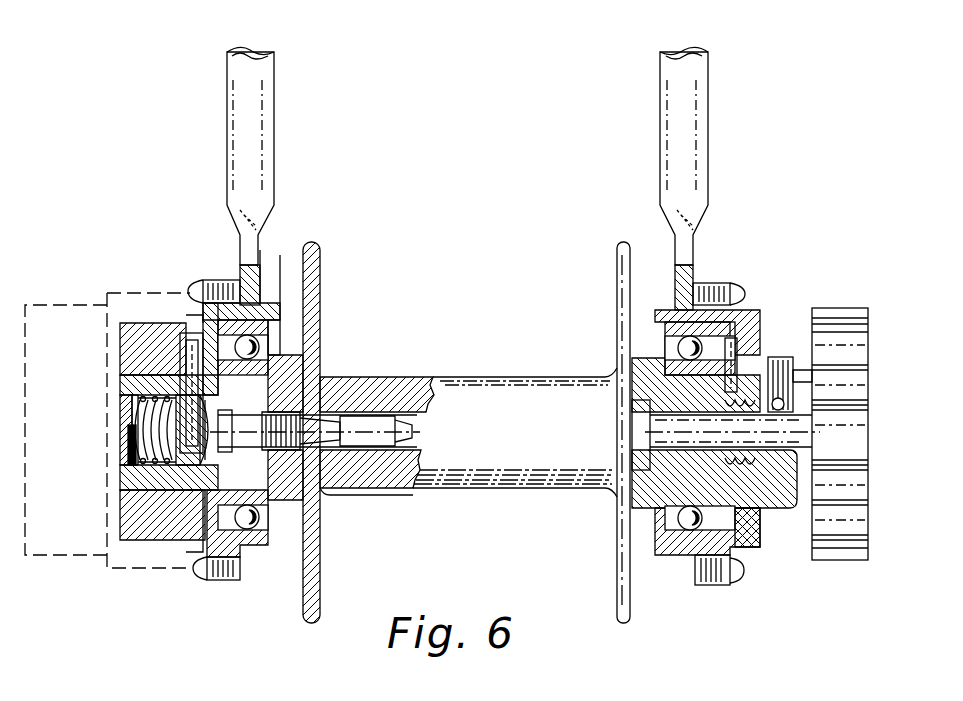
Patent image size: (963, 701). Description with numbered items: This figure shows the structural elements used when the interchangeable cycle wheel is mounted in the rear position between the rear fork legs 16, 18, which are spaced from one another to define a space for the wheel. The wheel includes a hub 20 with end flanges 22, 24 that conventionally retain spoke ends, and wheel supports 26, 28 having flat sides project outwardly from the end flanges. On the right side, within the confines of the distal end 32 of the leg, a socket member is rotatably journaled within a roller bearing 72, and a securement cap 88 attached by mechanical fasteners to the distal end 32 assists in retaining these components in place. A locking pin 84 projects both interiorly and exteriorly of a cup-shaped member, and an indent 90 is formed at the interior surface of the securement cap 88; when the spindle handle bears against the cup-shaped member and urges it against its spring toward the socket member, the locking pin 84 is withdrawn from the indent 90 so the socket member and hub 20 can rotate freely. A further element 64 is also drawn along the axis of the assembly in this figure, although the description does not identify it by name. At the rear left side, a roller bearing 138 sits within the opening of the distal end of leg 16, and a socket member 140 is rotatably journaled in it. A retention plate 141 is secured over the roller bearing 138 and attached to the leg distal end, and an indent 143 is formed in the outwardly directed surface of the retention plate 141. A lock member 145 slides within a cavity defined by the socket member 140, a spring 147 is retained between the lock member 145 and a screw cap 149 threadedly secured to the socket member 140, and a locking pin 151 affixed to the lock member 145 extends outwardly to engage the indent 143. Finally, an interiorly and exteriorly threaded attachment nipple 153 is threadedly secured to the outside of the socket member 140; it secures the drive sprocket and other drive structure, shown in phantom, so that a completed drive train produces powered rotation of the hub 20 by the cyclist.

The rear fork leg 16 is at (237, 140).
The rear fork leg 18 is at (688, 127).
The hub 20 is at (538, 385).
The end flange 22 is at (315, 283).
The end flange 24 is at (620, 265).
The wheel support 26 is at (330, 497).
The wheel support 28 is at (638, 440).
The distal end 32 is at (672, 555).
The axle 64 is at (790, 433).
The roller bearing 72 is at (682, 553).
The locking pin 84 is at (742, 315).
The securement cap 88 is at (755, 545).
The indent 90 is at (760, 348).
The roller bearing 138 is at (240, 530).
The socket member 140 is at (288, 385).
The retention plate 141 is at (195, 292).
The indent 143 is at (210, 345).
The lock member 145 is at (198, 470).
The spring 147 is at (122, 452).
The screw cap 149 is at (155, 425).
The locking pin 151 is at (190, 366).
The attachment nipple 153 is at (130, 340).